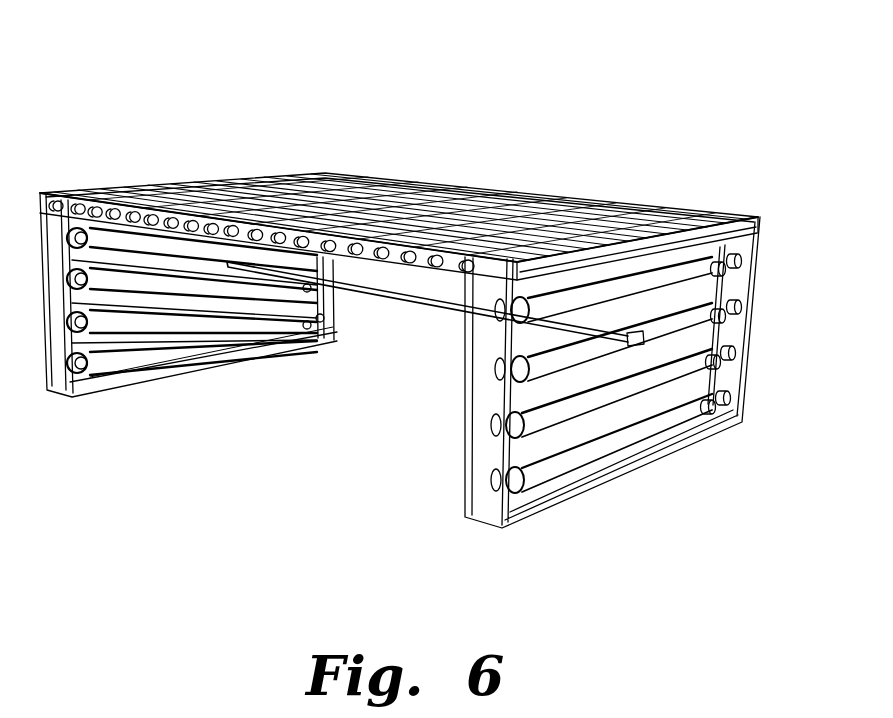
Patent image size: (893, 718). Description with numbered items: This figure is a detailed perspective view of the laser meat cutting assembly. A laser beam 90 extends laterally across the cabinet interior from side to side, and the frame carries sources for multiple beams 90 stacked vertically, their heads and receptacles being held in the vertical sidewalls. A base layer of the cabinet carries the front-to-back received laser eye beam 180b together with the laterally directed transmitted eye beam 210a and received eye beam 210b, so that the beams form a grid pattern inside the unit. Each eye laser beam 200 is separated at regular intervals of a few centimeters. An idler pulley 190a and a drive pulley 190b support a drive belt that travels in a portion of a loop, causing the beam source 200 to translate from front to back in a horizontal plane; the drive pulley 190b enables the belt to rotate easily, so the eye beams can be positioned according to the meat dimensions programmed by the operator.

The transmitted eye beam 210a is at (594, 295).
The received eye beam 210b is at (170, 183).
The received laser eye beam 180b is at (260, 243).
The idler pulley 190a is at (742, 298).
The drive pulley 190b is at (495, 427).
The laser beam 90 is at (392, 297).
The eye laser beam 200 is at (654, 343).